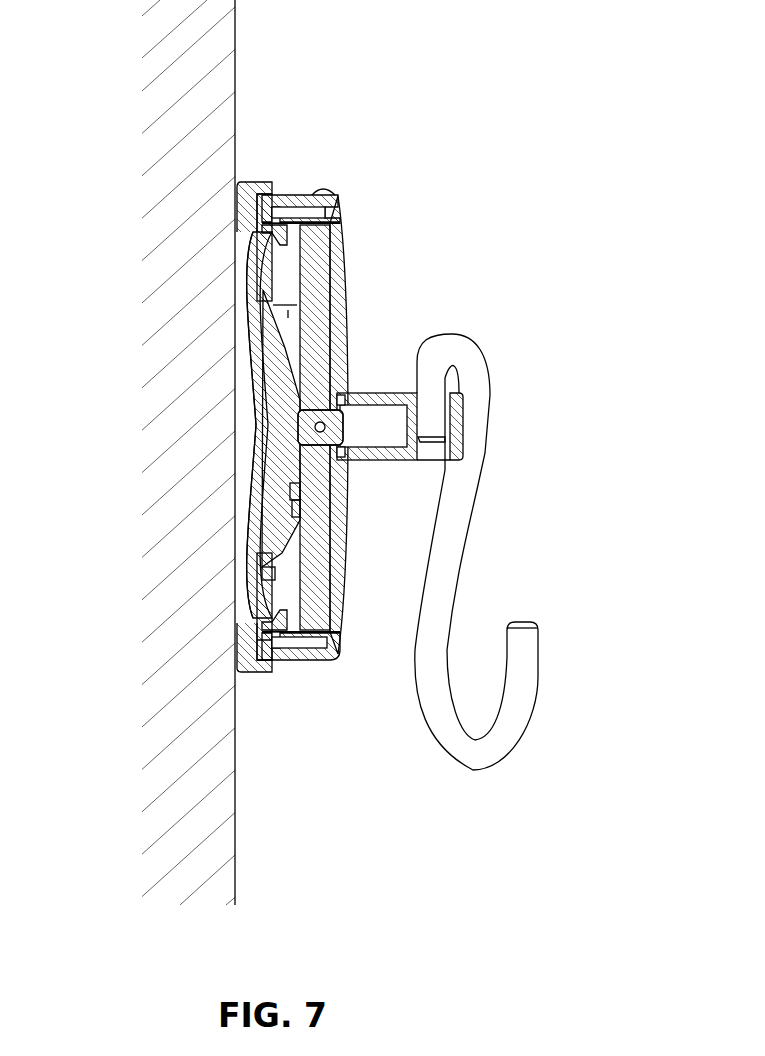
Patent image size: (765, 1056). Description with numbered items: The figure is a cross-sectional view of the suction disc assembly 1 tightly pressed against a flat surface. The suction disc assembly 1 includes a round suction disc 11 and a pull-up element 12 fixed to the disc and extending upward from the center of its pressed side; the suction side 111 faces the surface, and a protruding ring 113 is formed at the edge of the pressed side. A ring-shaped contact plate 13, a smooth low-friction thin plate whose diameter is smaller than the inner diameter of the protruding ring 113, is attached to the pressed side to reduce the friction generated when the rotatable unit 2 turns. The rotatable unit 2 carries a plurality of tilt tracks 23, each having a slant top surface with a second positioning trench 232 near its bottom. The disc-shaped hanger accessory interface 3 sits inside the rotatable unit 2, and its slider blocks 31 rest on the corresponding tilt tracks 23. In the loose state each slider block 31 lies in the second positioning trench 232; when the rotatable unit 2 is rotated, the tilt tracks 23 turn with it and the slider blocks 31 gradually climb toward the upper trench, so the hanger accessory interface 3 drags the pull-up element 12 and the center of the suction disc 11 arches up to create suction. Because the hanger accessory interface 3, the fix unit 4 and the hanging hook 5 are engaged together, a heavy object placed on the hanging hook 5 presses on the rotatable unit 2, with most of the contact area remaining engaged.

The suction disc assembly 1 is at (180, 438).
The suction disc 11 is at (288, 490).
The pull-up element 12 is at (300, 414).
The contact plate 13 is at (262, 642).
The suction side 111 is at (257, 378).
The protruding ring 113 is at (263, 191).
The rotatable unit 2 is at (209, 441).
The tilt track 23 is at (280, 223).
The second positioning trench 232 is at (288, 224).
The hanger accessory interface 3 is at (357, 427).
The slider block 31 is at (332, 223).
The fix unit 4 is at (338, 326).
The hanging hook 5 is at (523, 687).